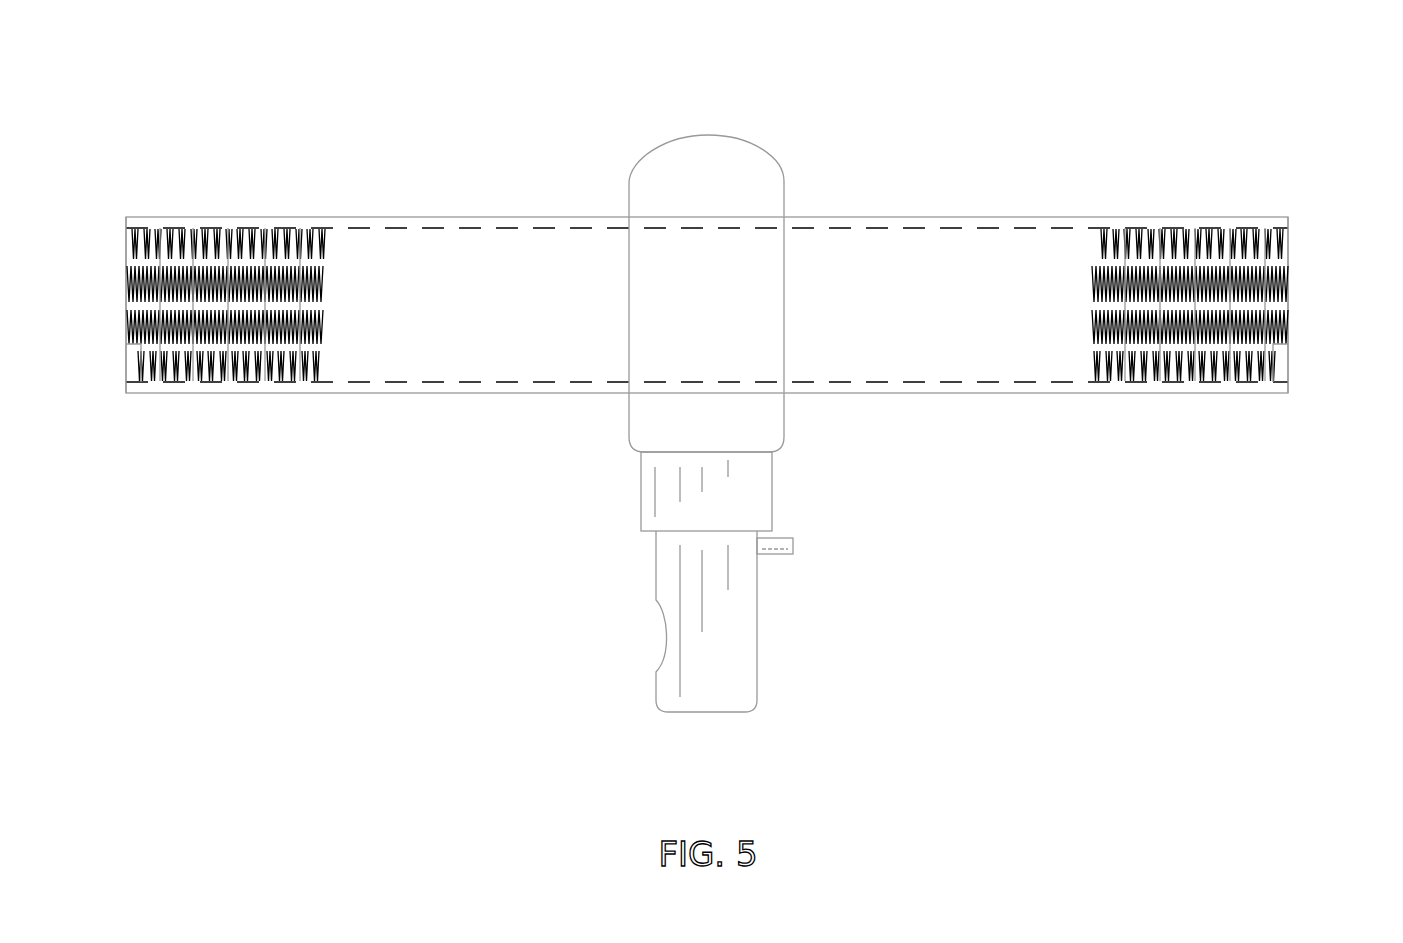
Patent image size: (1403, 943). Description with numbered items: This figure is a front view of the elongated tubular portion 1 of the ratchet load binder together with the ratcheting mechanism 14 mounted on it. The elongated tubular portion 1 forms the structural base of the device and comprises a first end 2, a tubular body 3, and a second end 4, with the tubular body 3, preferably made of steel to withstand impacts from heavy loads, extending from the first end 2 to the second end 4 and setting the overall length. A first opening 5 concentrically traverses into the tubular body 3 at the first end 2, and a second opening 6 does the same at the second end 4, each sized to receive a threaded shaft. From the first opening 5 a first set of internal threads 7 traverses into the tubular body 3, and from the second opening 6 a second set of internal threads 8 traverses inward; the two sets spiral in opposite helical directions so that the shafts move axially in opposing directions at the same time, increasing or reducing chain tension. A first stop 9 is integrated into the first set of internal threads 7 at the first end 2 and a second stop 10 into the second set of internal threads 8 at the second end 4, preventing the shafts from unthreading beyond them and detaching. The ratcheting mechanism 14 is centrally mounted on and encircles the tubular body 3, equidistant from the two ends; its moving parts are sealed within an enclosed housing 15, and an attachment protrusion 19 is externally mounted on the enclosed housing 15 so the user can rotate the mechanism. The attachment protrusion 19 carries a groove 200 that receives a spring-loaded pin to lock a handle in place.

The elongated tubular portion 1 is at (487, 190).
The first end 2 is at (126, 228).
The tubular body 3 is at (487, 385).
The second end 4 is at (1288, 222).
The first opening 5 is at (196, 295).
The second opening 6 is at (1223, 303).
The first set of internal threads 7 is at (255, 232).
The second set of internal threads 8 is at (1173, 242).
The first stop 9 is at (132, 370).
The second stop 10 is at (1282, 372).
The ratcheting mechanism 14 is at (744, 252).
The enclosed housing 15 is at (773, 180).
The attachment protrusion 19 is at (696, 582).
The groove 200 is at (668, 636).